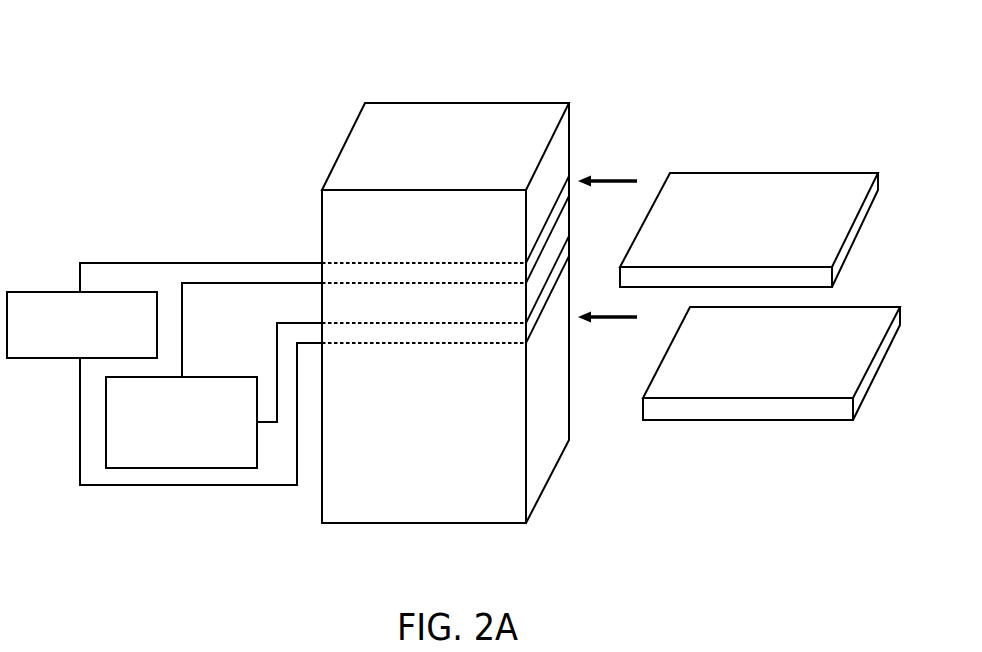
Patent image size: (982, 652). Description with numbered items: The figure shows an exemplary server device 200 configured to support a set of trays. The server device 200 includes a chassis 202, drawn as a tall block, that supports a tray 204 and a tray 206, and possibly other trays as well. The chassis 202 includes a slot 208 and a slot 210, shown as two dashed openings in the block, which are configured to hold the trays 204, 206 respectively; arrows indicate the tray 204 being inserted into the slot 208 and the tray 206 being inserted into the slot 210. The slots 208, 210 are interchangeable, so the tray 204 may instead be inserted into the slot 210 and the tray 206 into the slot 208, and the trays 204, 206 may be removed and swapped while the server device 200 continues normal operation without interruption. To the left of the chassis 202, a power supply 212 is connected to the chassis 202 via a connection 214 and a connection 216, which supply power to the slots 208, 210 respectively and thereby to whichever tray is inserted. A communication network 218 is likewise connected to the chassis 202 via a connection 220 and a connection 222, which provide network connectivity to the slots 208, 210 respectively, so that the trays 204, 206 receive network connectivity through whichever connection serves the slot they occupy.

The server device 200 is at (106, 38).
The chassis 202 is at (427, 103).
The tray 204 is at (833, 173).
The tray 206 is at (855, 307).
The slot 208 is at (445, 231).
The slot 210 is at (445, 291).
The power supply 212 is at (82, 325).
The connection 214 is at (152, 263).
The connection 216 is at (162, 485).
The communication network 218 is at (181, 422).
The connection 220 is at (182, 349).
The connection 222 is at (303, 323).